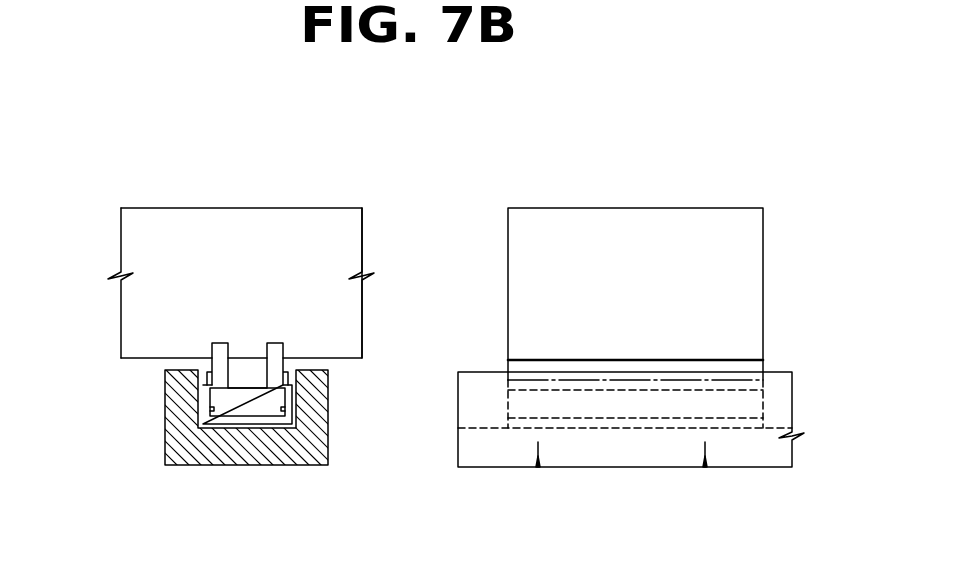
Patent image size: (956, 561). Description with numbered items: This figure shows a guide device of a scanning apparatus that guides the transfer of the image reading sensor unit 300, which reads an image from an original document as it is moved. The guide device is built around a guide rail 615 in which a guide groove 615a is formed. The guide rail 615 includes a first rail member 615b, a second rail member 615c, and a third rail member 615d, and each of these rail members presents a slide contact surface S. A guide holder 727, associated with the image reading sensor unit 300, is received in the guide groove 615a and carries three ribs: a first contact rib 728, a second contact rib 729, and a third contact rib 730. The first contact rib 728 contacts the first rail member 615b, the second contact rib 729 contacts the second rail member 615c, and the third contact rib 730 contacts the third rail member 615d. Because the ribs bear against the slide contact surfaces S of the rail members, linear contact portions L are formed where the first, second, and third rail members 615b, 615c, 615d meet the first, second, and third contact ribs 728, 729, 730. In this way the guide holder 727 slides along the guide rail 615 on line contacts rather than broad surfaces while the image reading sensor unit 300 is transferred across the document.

The image reading sensor unit 300 is at (511, 207).
The guide holder 727 is at (289, 334).
The second contact rib 729 is at (527, 385).
The first contact rib 728 is at (517, 437).
The third contact rib 730 is at (211, 373).
The guide rail 615 is at (243, 466).
The guide groove 615a is at (222, 421).
The first rail member 615b is at (287, 466).
The second rail member 615c is at (476, 390).
The third rail member 615d is at (168, 395).
The slide contact surfaces S is at (201, 403).
The linear contact portions L is at (625, 380).